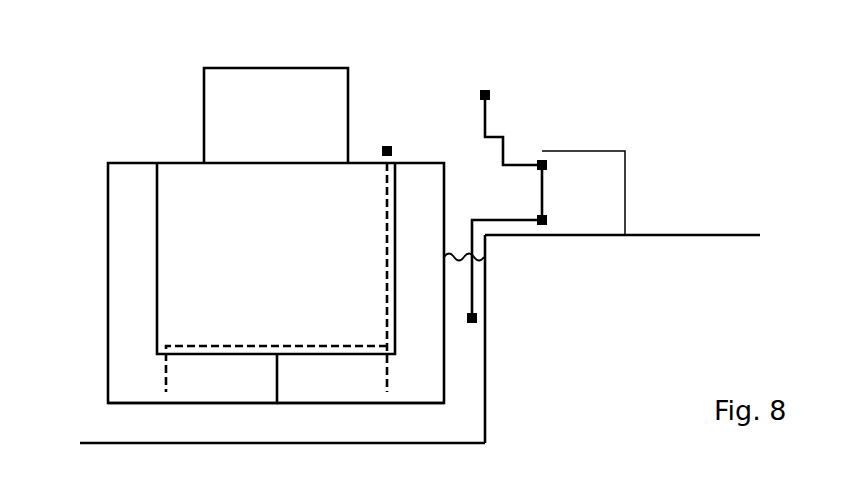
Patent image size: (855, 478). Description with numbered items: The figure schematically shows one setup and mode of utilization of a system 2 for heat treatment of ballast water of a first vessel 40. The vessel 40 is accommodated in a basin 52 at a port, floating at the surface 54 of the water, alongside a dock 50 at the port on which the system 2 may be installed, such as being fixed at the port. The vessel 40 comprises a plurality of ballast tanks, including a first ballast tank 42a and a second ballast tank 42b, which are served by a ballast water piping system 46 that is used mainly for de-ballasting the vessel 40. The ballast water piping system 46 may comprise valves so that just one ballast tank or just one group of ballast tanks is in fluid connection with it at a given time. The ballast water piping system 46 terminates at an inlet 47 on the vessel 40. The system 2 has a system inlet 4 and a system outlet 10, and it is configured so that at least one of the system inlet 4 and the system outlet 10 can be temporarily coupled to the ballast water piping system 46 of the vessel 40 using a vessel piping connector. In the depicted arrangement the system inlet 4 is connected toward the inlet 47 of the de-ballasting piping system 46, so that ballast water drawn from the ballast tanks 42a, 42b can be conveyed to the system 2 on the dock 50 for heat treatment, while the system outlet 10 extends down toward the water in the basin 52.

The vessel 40 is at (108, 88).
The first ballast tank 42a is at (436, 393).
The second ballast tank 42b is at (154, 393).
The ballast water piping system 46 is at (385, 234).
The inlet on the vessel for ballast water piping system 47 is at (386, 146).
The system inlet 4 is at (482, 91).
The system for heat treatment of ballast water 2 is at (590, 209).
The dock 50 is at (517, 237).
The surface of the water 54 is at (487, 258).
The basin 52 is at (487, 290).
The system outlet 10 is at (478, 322).